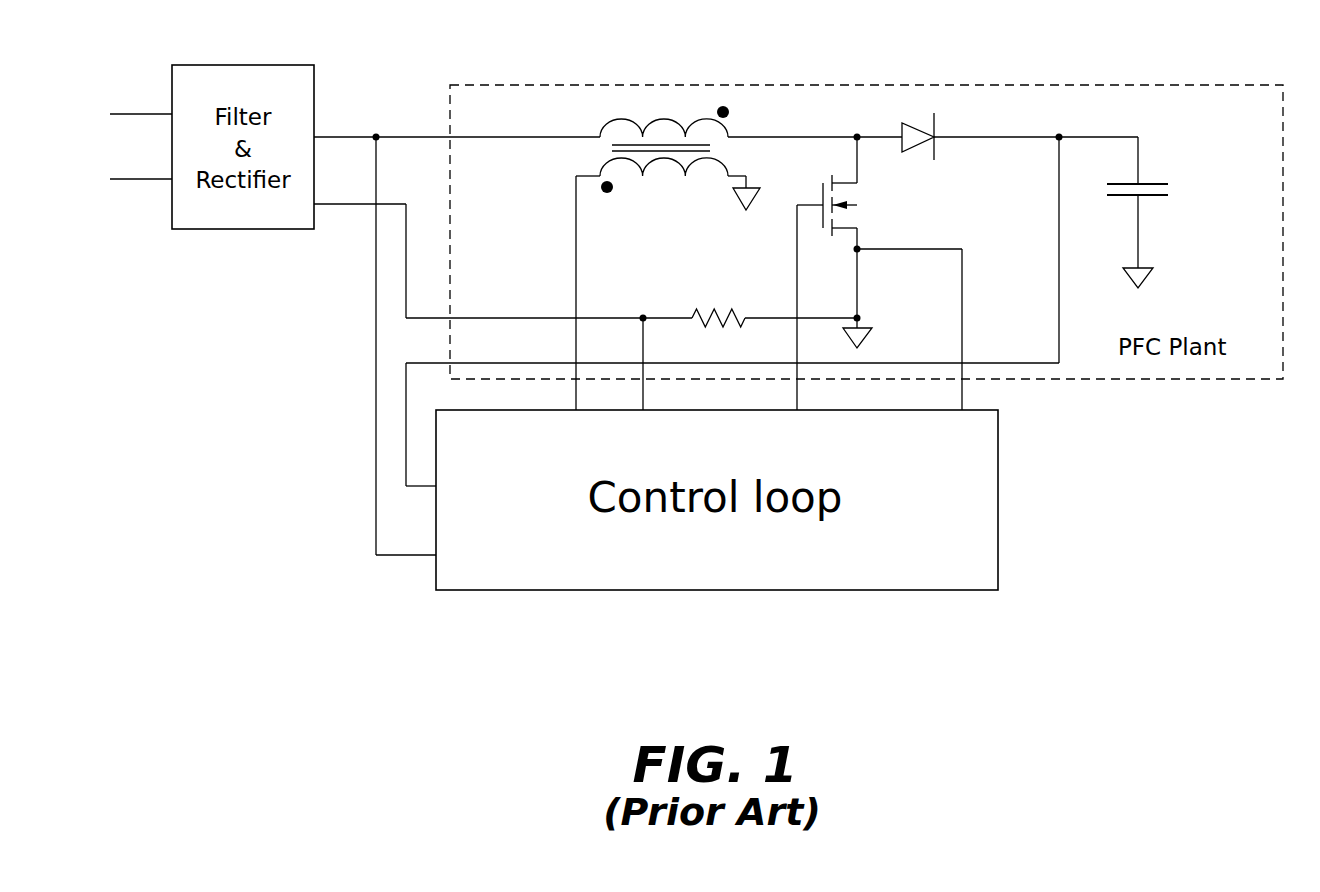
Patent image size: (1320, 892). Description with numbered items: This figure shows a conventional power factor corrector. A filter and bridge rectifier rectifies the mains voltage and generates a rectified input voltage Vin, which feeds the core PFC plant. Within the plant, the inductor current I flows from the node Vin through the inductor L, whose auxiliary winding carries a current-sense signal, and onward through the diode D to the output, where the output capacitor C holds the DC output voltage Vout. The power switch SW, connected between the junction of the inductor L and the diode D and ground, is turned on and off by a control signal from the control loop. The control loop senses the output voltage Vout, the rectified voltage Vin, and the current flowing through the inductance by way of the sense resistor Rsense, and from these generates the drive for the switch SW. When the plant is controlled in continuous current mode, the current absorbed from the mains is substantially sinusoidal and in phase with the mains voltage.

The rectified input voltage Vin is at (457, 326).
The inductor current I is at (548, 118).
The inductor L is at (716, 250).
The diode D is at (996, 125).
The power switch SW is at (871, 273).
The sense resistor Rsense is at (763, 301).
The output capacitor C is at (1132, 212).
The DC output voltage Vout is at (1141, 245).